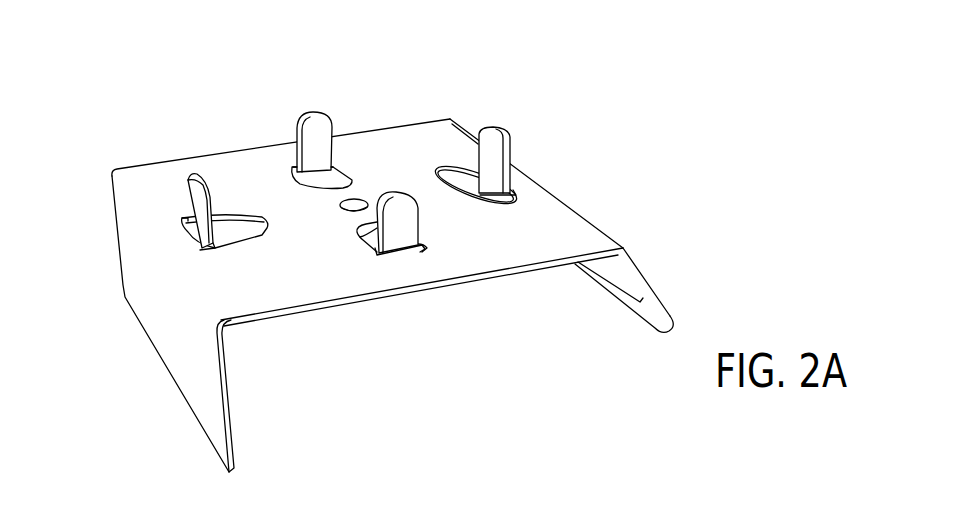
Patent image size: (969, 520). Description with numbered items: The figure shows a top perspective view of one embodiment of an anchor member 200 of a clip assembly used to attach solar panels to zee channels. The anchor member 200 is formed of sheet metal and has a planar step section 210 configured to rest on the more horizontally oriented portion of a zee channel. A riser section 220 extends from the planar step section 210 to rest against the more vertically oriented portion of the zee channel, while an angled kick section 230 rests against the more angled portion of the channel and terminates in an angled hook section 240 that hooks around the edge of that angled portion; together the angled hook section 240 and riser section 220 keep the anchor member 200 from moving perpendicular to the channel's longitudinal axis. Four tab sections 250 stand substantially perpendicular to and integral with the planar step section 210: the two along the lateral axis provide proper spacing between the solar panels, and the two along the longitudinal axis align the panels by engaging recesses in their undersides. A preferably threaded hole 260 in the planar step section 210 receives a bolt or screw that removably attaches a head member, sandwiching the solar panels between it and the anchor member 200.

The anchor member 200 is at (612, 87).
The planar step section 210 is at (362, 305).
The riser section 220 is at (122, 246).
The angled kick section 230 is at (650, 287).
The angled hook section 240 is at (640, 318).
The tab sections 250 is at (400, 203).
The hole 260 is at (340, 210).